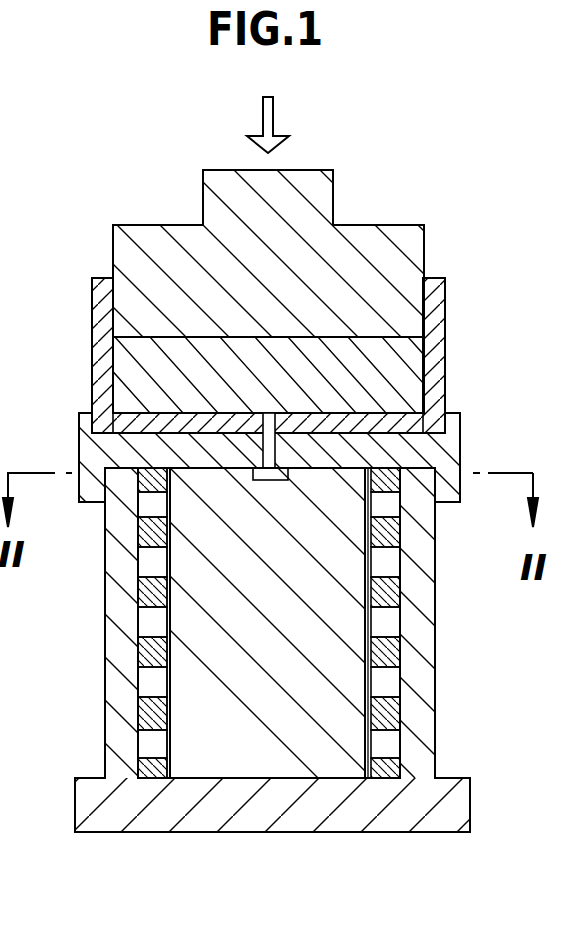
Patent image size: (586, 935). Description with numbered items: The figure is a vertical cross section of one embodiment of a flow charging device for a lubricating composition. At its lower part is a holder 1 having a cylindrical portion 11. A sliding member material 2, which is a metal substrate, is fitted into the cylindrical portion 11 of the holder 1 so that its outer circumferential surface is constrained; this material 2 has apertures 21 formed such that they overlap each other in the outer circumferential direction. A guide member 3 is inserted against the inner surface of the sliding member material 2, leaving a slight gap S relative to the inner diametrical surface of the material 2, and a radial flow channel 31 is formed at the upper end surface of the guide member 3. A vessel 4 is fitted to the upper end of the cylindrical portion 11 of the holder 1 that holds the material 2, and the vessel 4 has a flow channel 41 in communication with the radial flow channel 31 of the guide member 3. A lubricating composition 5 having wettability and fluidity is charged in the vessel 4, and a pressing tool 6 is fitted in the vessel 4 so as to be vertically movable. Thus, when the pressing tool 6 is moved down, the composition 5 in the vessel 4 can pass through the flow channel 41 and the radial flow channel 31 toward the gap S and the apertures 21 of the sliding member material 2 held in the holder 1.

The holder 1 is at (293, 650).
The cylindrical portion 11 is at (423, 641).
The sliding member material 2 is at (157, 657).
The apertures 21 is at (148, 690).
The guide member 3 is at (195, 595).
The radial flow channel 31 is at (365, 466).
The vessel 4 is at (432, 337).
The flow channel 41 is at (272, 450).
The lubricating composition 5 is at (150, 360).
The pressing tool 6 is at (357, 258).
The gap S is at (370, 745).